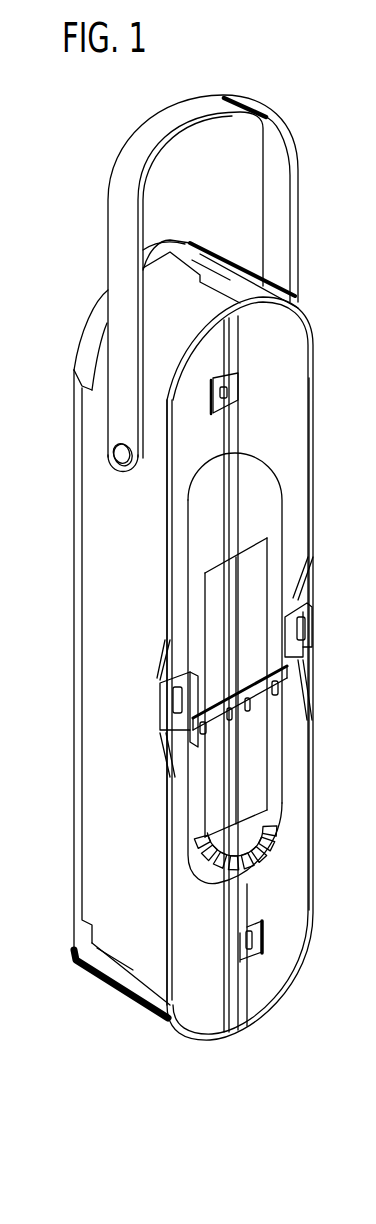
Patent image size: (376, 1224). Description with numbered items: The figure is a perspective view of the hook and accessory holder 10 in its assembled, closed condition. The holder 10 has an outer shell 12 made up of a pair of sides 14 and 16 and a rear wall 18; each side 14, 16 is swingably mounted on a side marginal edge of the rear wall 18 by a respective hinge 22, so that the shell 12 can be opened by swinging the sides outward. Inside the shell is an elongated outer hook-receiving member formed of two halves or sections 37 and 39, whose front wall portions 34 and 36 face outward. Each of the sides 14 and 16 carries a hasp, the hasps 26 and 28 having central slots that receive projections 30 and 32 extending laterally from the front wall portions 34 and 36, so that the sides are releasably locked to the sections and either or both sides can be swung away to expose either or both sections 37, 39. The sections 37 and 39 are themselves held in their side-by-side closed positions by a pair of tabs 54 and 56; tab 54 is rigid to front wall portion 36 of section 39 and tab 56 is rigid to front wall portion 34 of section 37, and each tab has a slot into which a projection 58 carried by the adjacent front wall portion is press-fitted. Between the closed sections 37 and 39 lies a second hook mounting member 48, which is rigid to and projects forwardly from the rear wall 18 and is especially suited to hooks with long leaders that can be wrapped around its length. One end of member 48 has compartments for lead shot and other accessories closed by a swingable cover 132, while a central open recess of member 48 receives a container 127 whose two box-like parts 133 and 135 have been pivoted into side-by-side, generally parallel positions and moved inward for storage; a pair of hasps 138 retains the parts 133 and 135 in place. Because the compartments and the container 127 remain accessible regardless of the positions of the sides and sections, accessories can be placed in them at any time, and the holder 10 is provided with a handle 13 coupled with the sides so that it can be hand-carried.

The hook and accessory holder 10 is at (335, 448).
The outer shell 12 is at (317, 385).
The handle 13 is at (298, 140).
The side 14 is at (98, 512).
The side 16 is at (305, 322).
The rear wall 18 is at (98, 316).
The hinge 22 is at (82, 705).
The hasp 26 is at (178, 675).
The hasp 28 is at (303, 594).
The projection 30 is at (172, 706).
The projection 32 is at (308, 620).
The front wall portion 34 is at (178, 622).
The front wall portion 36 is at (290, 553).
The section 37 is at (188, 522).
The section 39 is at (292, 516).
The second hook mounting member 48 is at (271, 744).
The tab 54 is at (210, 402).
The tab 56 is at (265, 937).
The projection 58 is at (229, 393).
The container 127 is at (269, 767).
The swingable cover 132 is at (268, 822).
The box-like part 133 is at (217, 584).
The box-like part 135 is at (248, 568).
The hasp 138 is at (257, 680).